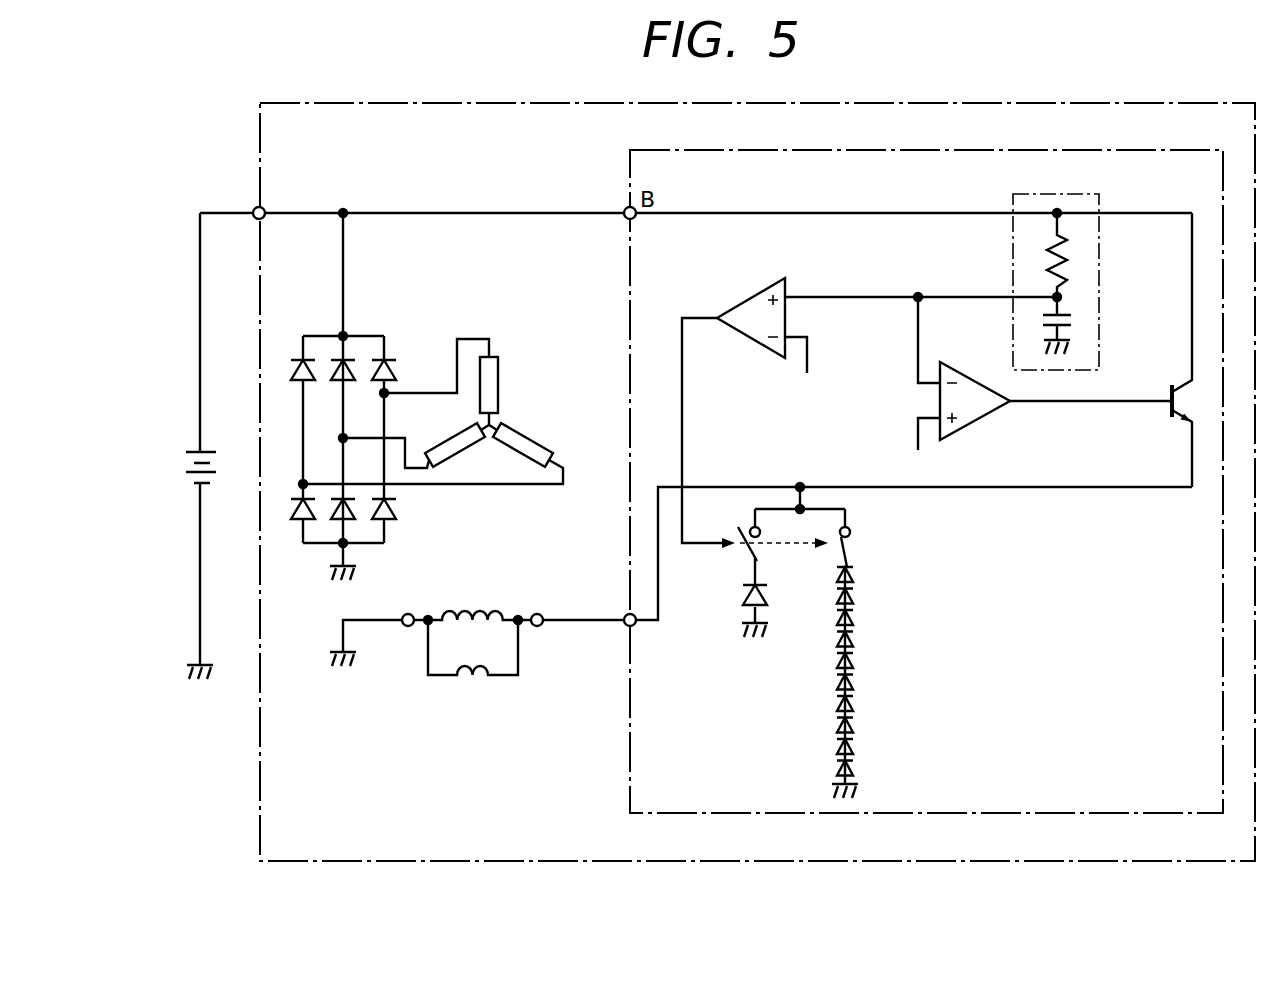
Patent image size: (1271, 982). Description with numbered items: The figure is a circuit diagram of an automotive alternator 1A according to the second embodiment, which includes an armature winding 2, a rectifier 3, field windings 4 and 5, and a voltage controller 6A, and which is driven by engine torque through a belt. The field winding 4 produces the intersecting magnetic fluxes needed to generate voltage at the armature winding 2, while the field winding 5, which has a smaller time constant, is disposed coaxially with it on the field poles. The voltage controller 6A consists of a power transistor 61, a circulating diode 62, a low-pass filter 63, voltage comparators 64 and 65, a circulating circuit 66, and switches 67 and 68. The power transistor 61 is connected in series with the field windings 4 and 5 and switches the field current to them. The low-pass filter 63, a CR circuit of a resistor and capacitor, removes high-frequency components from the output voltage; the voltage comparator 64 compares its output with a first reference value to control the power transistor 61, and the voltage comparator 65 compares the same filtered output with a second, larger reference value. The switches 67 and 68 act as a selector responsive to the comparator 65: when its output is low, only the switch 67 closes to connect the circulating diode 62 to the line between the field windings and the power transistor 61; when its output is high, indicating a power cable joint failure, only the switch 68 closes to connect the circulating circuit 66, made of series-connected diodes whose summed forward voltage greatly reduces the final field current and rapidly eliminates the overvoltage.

The automotive alternator 1A is at (1175, 103).
The voltage controller 6A is at (1150, 150).
The armature winding 2 is at (505, 425).
The rectifier 3 is at (363, 336).
The field winding 4 is at (484, 612).
The field winding 5 is at (464, 687).
The power transistor 61 is at (1185, 383).
The circulating diode 62 is at (742, 598).
The low-pass filter 63 is at (1099, 272).
The voltage comparator 64 is at (977, 381).
The voltage comparator 65 is at (755, 294).
The circulating circuit 66 is at (853, 657).
The switch 67 is at (738, 557).
The switch 68 is at (855, 546).